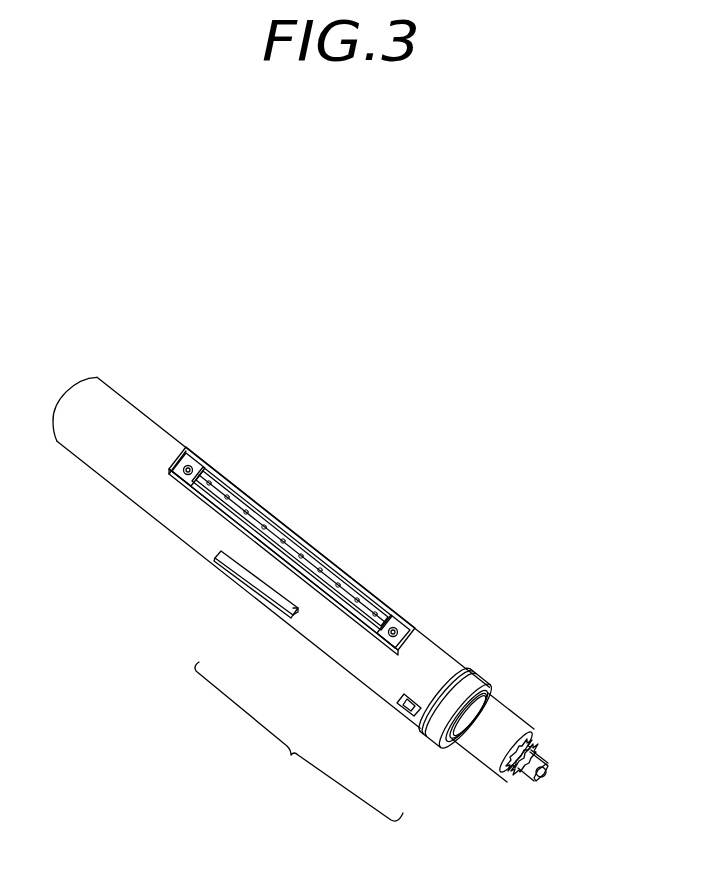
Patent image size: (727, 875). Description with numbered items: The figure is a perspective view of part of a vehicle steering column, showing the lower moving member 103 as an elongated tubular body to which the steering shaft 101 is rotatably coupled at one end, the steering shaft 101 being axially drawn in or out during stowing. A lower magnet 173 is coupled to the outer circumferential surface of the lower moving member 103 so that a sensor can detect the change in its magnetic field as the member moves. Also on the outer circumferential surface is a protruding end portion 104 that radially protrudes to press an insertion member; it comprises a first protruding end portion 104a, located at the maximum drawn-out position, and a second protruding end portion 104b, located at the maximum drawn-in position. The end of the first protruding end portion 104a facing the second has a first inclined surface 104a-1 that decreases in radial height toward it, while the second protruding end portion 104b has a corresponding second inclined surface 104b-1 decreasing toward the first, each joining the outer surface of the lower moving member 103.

The steering shaft 101 is at (505, 729).
The lower moving member 103 is at (133, 420).
The lower magnet 173 is at (287, 507).
The protruding end portion 104 is at (299, 741).
The first protruding end portion 104a is at (253, 583).
The first inclined surface 104a-1 is at (293, 613).
The second protruding end portion 104b is at (425, 712).
The second inclined surface 104b-1 is at (400, 703).